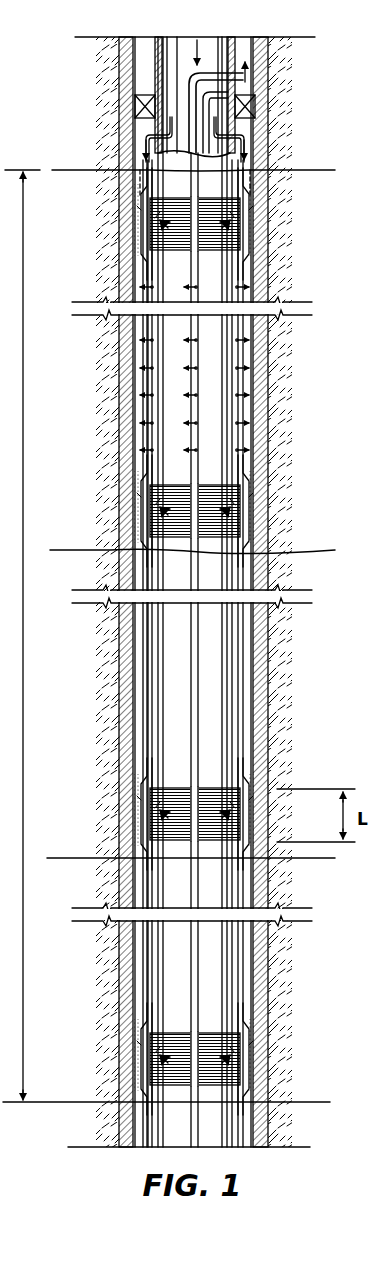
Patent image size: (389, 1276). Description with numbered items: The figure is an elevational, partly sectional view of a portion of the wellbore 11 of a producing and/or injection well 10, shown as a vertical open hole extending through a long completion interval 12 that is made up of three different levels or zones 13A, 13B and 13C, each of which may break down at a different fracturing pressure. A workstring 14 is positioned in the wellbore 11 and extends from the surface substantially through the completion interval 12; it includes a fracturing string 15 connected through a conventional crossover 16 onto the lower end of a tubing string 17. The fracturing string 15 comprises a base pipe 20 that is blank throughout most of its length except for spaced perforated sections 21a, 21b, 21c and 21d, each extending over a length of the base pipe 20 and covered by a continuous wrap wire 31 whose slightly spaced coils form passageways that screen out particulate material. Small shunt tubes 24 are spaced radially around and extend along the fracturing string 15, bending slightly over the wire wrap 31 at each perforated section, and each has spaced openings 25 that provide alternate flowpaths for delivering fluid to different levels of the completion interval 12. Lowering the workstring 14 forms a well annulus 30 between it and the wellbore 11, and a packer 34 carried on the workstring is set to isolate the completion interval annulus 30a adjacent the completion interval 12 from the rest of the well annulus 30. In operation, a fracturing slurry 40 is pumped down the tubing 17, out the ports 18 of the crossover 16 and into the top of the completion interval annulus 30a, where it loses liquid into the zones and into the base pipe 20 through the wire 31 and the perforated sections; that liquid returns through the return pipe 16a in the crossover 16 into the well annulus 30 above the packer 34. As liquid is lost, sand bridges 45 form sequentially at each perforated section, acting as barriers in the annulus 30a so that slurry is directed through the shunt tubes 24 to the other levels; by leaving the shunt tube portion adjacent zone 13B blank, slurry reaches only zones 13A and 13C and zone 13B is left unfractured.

The well 10 is at (98, 157).
The wellbore 11 is at (137, 30).
The completion interval 12 is at (20, 636).
The zone 13A is at (353, 382).
The zone 13B is at (353, 715).
The zone 13C is at (353, 1022).
The workstring 14 is at (140, 355).
The fracturing string 15 is at (245, 432).
The crossover 16 is at (213, 73).
The return pipe 16a is at (185, 92).
The tubing string 17 is at (118, 68).
The ports 18 is at (163, 120).
The base pipe 20 is at (215, 665).
The perforated section 21a is at (138, 262).
The perforated section 21b is at (138, 550).
The perforated section 21c is at (138, 858).
The perforated section 21d is at (138, 1100).
The shunt tube 24 is at (242, 276).
The openings 25 is at (245, 356).
The well annulus 30 is at (250, 40).
The completion interval annulus 30a is at (245, 633).
The wrap wire 31 is at (215, 488).
The packer 34 is at (249, 113).
The fracturing slurry 40 is at (197, 30).
The sand bridge 45 is at (248, 250).